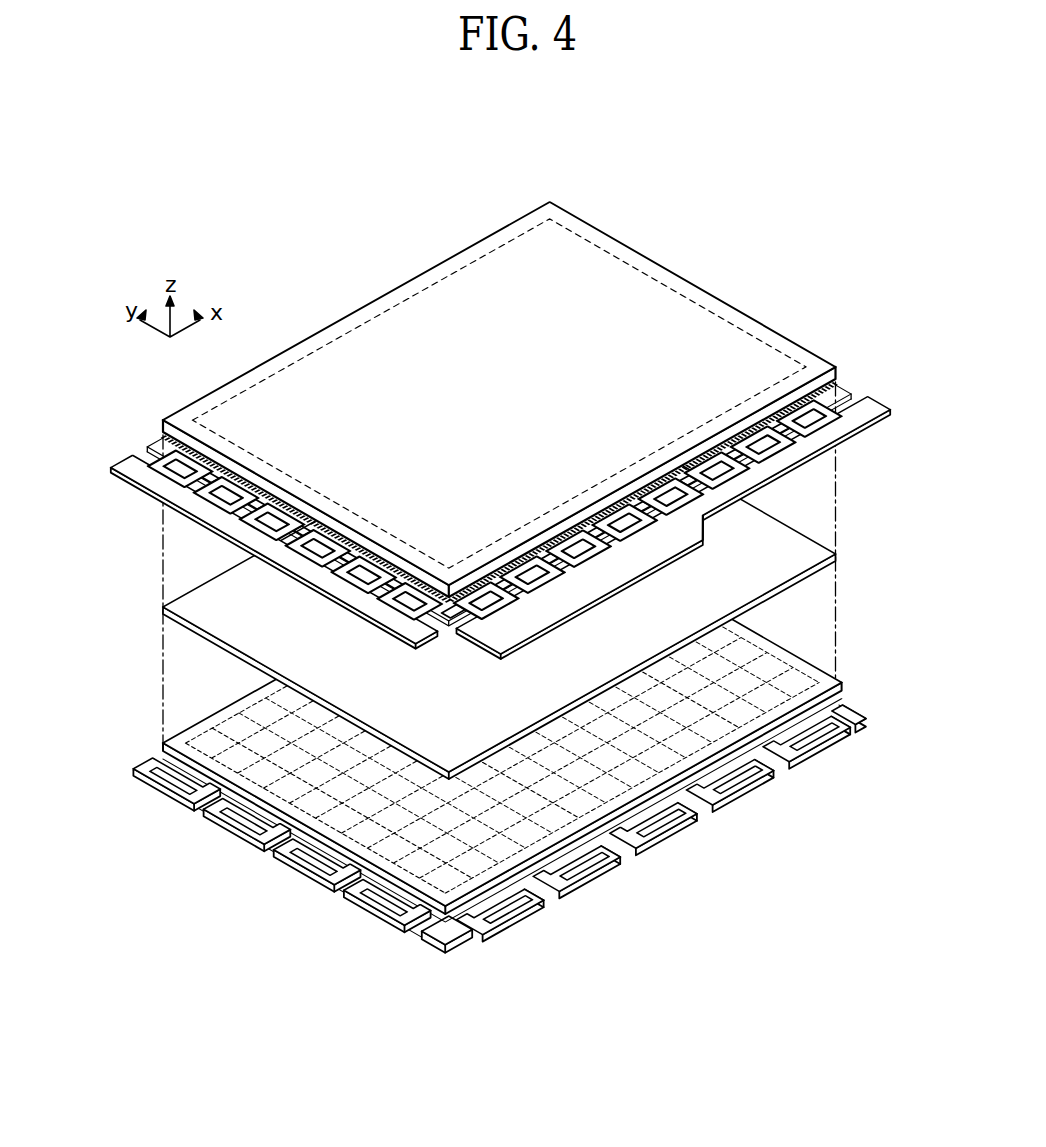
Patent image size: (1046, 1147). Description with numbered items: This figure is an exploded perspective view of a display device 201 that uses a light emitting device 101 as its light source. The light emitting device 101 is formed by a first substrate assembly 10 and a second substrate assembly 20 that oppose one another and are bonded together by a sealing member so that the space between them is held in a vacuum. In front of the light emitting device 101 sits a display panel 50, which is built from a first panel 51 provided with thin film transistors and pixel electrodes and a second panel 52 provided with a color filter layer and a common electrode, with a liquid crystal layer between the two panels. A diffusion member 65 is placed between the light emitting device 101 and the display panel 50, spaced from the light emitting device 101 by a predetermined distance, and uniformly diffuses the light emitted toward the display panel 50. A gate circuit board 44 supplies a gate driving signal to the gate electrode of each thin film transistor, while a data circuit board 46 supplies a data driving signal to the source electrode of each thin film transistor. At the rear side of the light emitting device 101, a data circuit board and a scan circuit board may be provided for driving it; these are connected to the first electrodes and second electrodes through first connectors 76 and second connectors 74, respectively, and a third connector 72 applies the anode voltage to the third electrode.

The display device 201 is at (512, 157).
The display panel 50 is at (353, 308).
The second panel 52 is at (625, 285).
The first panel 51 is at (840, 390).
The data circuit board 46 is at (867, 410).
The gate circuit board 44 is at (132, 463).
The diffusion member 65 is at (212, 597).
The third connector 72 is at (763, 648).
The second substrate assembly 20 is at (842, 683).
The first substrate assembly 10 is at (855, 714).
The light emitting device 101 is at (193, 724).
The second connectors 74 is at (277, 860).
The first connectors 76 is at (543, 903).